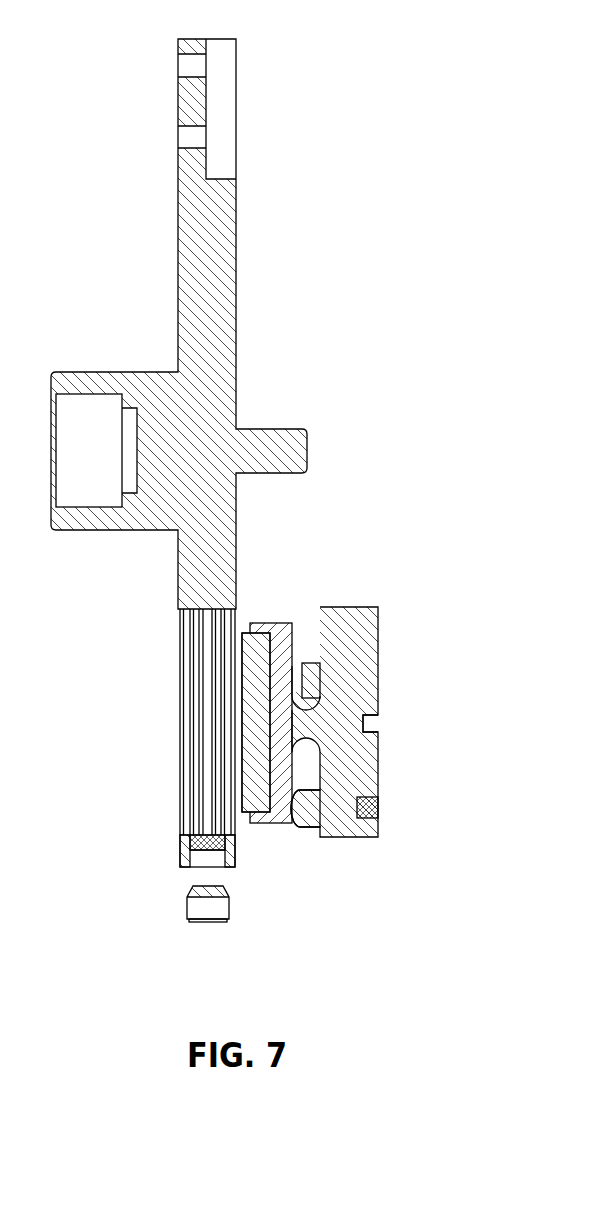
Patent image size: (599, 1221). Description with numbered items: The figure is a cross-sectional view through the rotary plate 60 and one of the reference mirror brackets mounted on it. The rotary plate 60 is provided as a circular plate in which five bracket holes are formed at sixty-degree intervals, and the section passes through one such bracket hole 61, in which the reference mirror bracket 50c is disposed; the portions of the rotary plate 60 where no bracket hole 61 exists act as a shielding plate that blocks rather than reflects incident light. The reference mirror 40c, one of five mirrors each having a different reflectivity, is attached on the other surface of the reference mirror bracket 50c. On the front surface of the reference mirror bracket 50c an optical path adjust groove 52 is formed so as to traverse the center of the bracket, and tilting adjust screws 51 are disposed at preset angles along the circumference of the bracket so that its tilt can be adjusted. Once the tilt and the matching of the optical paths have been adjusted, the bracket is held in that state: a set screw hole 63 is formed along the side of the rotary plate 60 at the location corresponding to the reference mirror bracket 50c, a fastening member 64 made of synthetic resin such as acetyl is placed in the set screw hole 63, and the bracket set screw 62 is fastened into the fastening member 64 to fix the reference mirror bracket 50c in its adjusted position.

The rotary plate 60 is at (220, 275).
The bracket hole 61 is at (182, 706).
The bracket set screw 62 is at (208, 913).
The set screw hole 63 is at (205, 866).
The fastening member 64 is at (183, 843).
The reference mirror 40c is at (258, 797).
The reference mirror bracket 50c is at (365, 657).
The tilting adjust screw 51 is at (312, 663).
The optical path adjust groove 52 is at (372, 720).